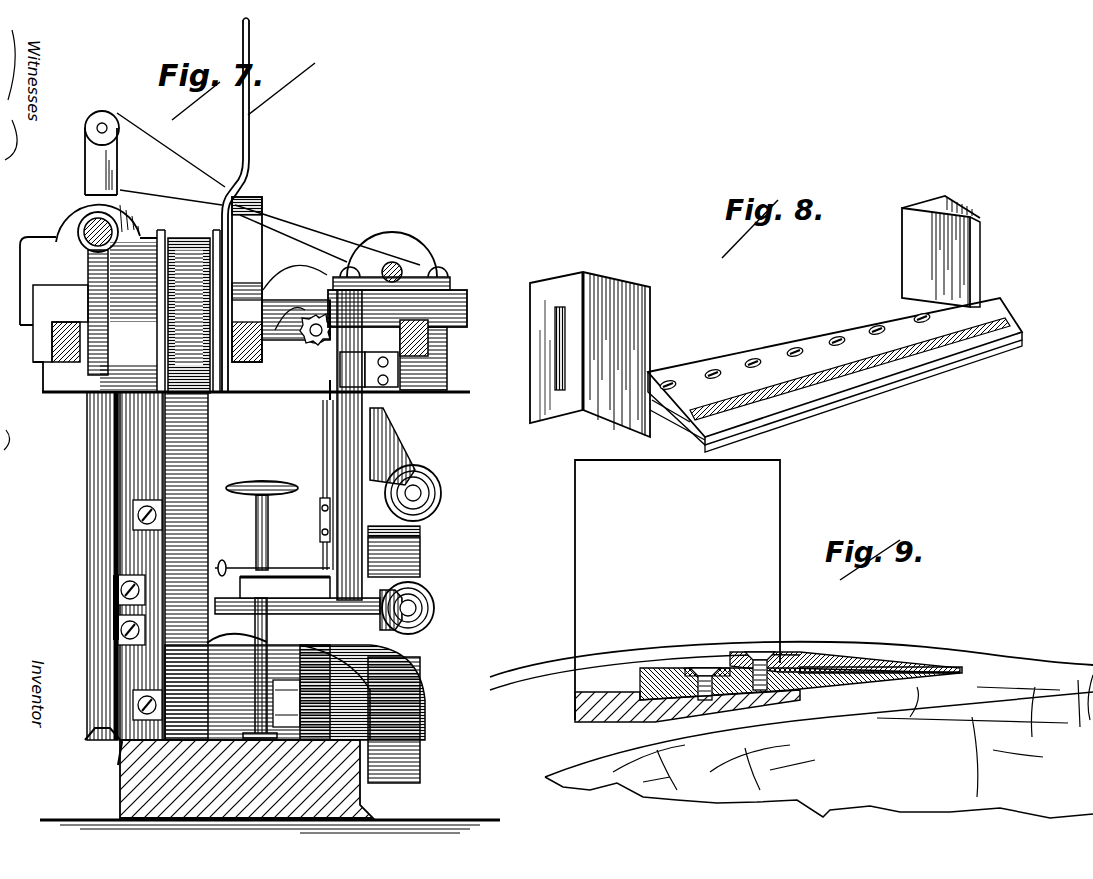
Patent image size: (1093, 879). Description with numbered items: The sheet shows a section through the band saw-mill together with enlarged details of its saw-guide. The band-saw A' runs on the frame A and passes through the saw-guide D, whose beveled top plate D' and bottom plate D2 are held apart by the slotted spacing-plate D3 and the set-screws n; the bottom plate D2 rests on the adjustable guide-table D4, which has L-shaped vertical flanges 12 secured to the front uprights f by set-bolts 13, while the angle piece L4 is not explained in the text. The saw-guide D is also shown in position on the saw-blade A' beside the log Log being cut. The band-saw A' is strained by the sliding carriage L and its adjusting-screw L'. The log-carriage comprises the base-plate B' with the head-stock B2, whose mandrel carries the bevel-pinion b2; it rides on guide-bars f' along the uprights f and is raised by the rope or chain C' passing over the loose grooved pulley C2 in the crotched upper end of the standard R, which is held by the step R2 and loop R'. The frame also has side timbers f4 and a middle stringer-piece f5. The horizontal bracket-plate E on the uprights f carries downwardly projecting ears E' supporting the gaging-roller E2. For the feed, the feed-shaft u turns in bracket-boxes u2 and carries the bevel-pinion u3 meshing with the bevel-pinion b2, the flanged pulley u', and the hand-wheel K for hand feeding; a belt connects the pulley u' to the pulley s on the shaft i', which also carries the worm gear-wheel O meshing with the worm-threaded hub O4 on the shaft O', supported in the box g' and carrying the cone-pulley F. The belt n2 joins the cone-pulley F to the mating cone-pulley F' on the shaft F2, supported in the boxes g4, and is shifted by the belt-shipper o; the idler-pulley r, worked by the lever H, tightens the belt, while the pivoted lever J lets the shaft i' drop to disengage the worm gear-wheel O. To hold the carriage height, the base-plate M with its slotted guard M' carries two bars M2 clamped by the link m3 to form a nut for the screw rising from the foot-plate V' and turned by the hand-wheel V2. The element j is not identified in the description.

In FIG. 7, the frame A is at (270, 786).
In FIG. 7, the band-saw A' is at (417, 660).
In FIG. 9, the band-saw A' is at (791, 664).
In FIG. 7, the standard R is at (93, 463).
In FIG. 7, the step R2 is at (90, 730).
In FIG. 7, the loop R' is at (207, 516).
In FIG. 7, the hand-wheel K is at (95, 577).
In FIG. 7, the front uprights f is at (199, 587).
In FIG. 7, the bracket-boxes u2 is at (107, 592).
In FIG. 7, the shaft i' is at (174, 526).
In FIG. 7, the belt-shipper o is at (78, 395).
In FIG. 7, the base-plate M is at (168, 403).
In FIG. 7, the pivoted lever J is at (50, 347).
In FIG. 7, the cone-pulley F is at (89, 219).
In FIG. 7, the worm-threaded hub O4 is at (98, 219).
In FIG. 7, the shaft O' is at (87, 293).
In FIG. 7, the box g' is at (38, 250).
In FIG. 7, the loose grooved pulley C2 is at (118, 147).
In FIG. 7, the rope or chain C' is at (171, 159).
In FIG. 7, the lever H is at (248, 132).
In FIG. 7, the pulley s is at (168, 242).
In FIG. 7, the worm gear-wheel O is at (247, 279).
In FIG. 7, the idler-pulley r is at (207, 403).
In FIG. 7, the middle stringer-piece f5 is at (257, 413).
In FIG. 7, the pin j is at (276, 418).
In FIG. 7, the belt n2 is at (327, 234).
In FIG. 7, the cone-pulley F' is at (399, 261).
In FIG. 7, the boxes g4 is at (382, 265).
In FIG. 7, the shaft F2 is at (395, 262).
In FIG. 7, the side timbers f4 is at (430, 340).
In FIG. 7, the horizontal bracket-plate E is at (350, 445).
In FIG. 7, the guide-bars f' is at (394, 418).
In FIG. 7, the ears E' is at (398, 446).
In FIG. 7, the gaging-roller E2 is at (442, 488).
In FIG. 7, the head-stock B2 is at (422, 547).
In FIG. 7, the bevel-pinion u3 is at (420, 577).
In FIG. 7, the bevel-pinion b2 is at (437, 608).
In FIG. 7, the feed-shaft u is at (297, 598).
In FIG. 7, the flanged pulley u' is at (271, 560).
In FIG. 7, the link m3 is at (226, 589).
In FIG. 7, the slotted guard M' is at (280, 559).
In FIG. 7, the bars M2 is at (289, 553).
In FIG. 7, the hand-wheel V2 is at (262, 516).
In FIG. 7, the vertical flanges 12 is at (320, 530).
In FIG. 8, the vertical flanges 12 is at (616, 320).
In FIG. 9, the vertical flanges 12 is at (677, 590).
In FIG. 7, the set-bolts 13 is at (320, 508).
In FIG. 7, the foot-plate V' is at (263, 646).
In FIG. 7, the sliding carriage L is at (247, 687).
In FIG. 7, the base-plate B' is at (361, 709).
In FIG. 8, the angle bracket L4 is at (647, 342).
In FIG. 8, the saw-guide D is at (835, 371).
In FIG. 9, the saw-guide D is at (800, 684).
In FIG. 8, the top plate D' is at (850, 369).
In FIG. 9, the top plate D' is at (845, 648).
In FIG. 8, the bottom plate D2 is at (863, 396).
In FIG. 9, the bottom plate D2 is at (836, 690).
In FIG. 8, the spacing-plate D3 is at (672, 422).
In FIG. 9, the spacing-plate D3 is at (808, 690).
In FIG. 8, the set-screws n is at (794, 351).
In FIG. 9, the set-screws n is at (760, 652).
In FIG. 9, the adjusting-screw L' is at (705, 656).
In FIG. 9, the adjustable guide-table D4 is at (687, 719).
In FIG. 9, the log Log is at (900, 777).